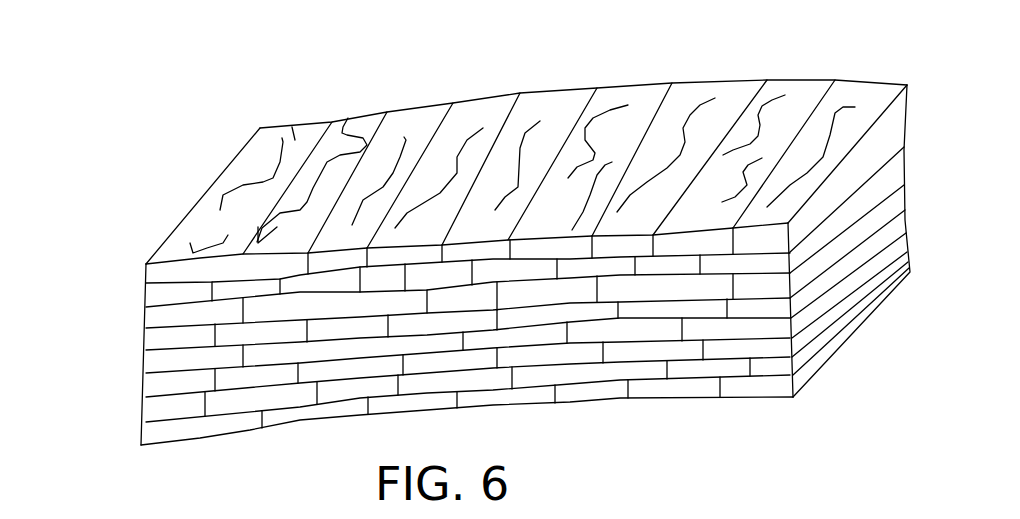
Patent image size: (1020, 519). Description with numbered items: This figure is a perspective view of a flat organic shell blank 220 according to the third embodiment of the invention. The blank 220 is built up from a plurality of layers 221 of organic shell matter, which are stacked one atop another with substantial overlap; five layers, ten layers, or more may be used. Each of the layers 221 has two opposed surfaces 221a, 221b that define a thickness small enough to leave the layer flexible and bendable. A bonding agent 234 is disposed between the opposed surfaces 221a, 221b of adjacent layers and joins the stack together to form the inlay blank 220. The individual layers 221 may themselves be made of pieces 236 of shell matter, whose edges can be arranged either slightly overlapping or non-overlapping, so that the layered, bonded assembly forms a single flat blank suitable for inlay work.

The organic shell blank 220 is at (465, 242).
The layers 221 is at (412, 234).
The opposed surface 221a is at (268, 278).
The opposed surface 221b is at (201, 289).
The bonding agent 234 is at (152, 330).
The pieces 236 is at (283, 128).